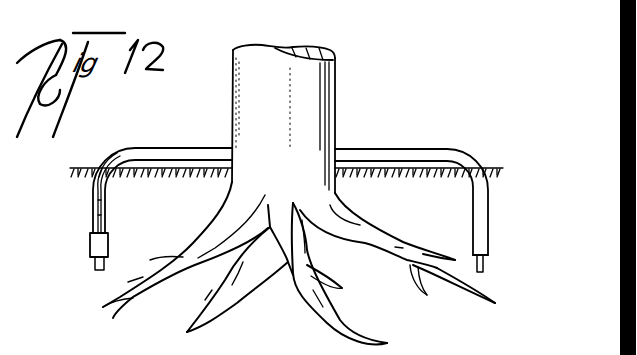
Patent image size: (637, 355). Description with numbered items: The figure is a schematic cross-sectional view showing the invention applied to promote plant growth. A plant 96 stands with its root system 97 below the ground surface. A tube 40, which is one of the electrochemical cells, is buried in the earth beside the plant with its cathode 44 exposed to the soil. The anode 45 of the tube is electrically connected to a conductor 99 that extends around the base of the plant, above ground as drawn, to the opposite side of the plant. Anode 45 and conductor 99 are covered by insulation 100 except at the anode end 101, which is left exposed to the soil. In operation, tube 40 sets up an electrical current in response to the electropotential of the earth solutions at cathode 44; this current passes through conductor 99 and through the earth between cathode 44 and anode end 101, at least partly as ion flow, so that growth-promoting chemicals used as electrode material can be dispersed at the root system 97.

The plant 96 is at (337, 102).
The root system 97 is at (293, 270).
The conductor 99 is at (110, 187).
The anode 45 is at (106, 226).
The tube 40 is at (90, 243).
The cathode 44 is at (94, 264).
The insulation 100 is at (473, 203).
The anode end 101 is at (477, 261).